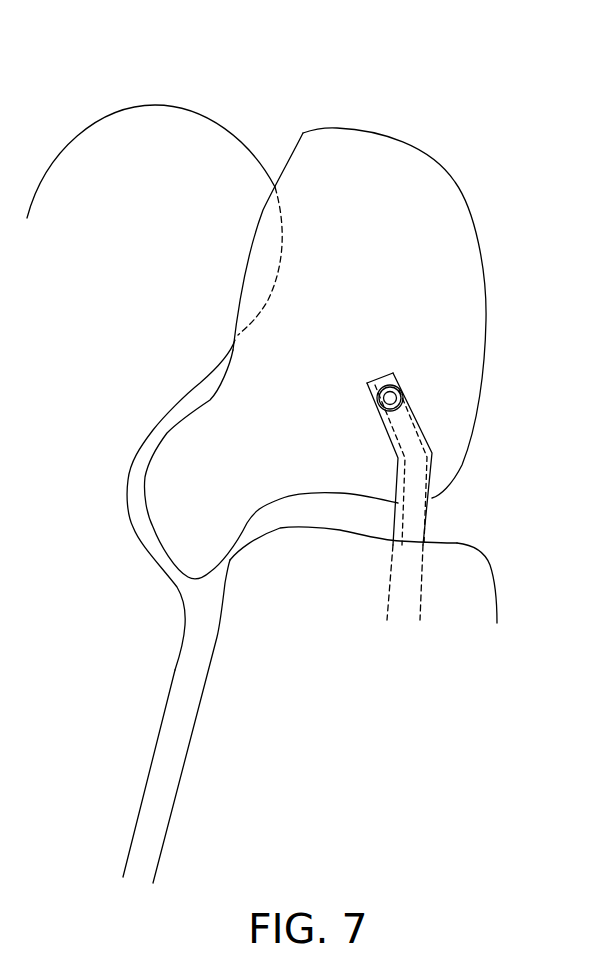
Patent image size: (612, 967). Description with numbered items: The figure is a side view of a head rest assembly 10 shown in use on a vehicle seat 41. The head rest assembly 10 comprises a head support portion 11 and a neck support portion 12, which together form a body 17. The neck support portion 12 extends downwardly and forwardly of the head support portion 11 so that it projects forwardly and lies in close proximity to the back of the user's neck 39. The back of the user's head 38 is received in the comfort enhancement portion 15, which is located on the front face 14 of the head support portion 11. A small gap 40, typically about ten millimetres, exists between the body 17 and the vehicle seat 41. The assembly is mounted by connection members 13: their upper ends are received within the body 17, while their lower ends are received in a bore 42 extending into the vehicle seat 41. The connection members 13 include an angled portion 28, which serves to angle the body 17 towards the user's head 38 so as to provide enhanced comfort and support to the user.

The head rest assembly 10 is at (480, 474).
The head support portion 11 is at (453, 182).
The neck support portion 12 is at (188, 545).
The connection members 13 is at (412, 519).
The front face 14 is at (303, 133).
The comfort enhancement portion 15 is at (265, 250).
The body 17 is at (418, 283).
The angled portion 28 is at (402, 425).
The user's head 38 is at (88, 143).
The user's neck 39 is at (125, 483).
The gap 40 is at (232, 560).
The vehicle seat 41 is at (468, 595).
The bore 42 is at (405, 578).